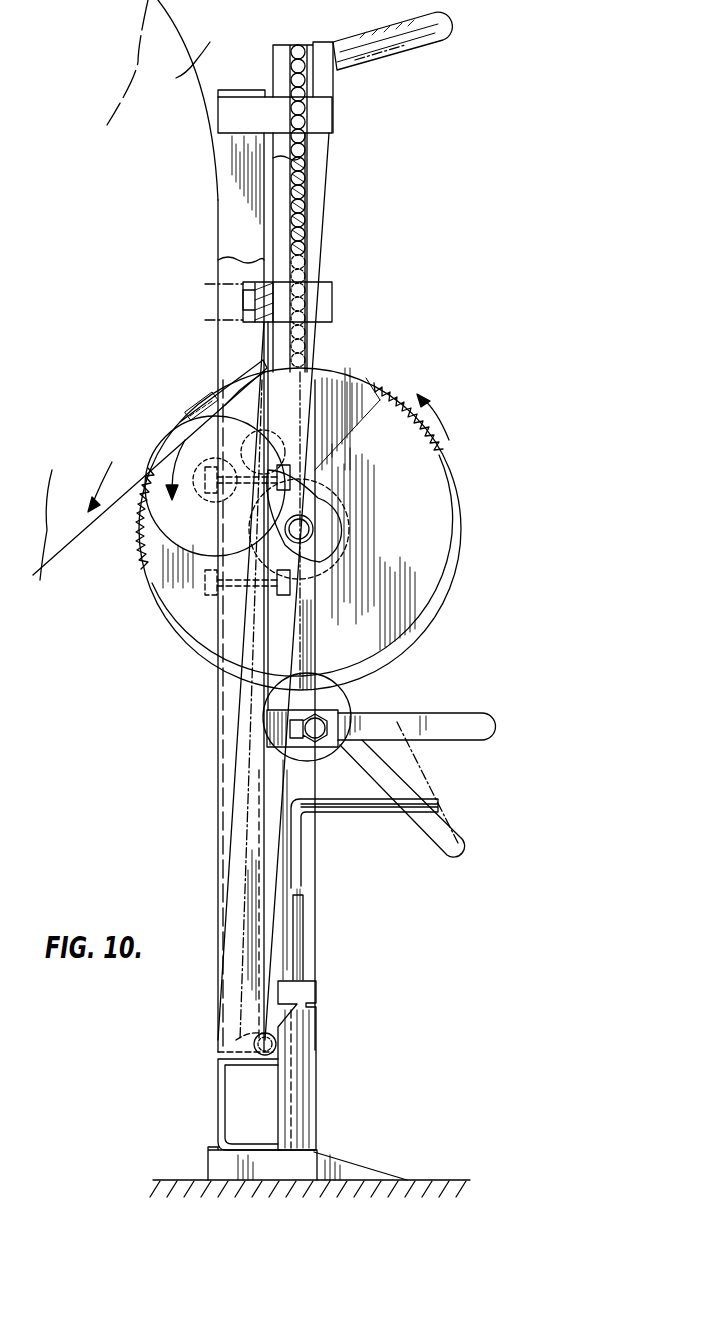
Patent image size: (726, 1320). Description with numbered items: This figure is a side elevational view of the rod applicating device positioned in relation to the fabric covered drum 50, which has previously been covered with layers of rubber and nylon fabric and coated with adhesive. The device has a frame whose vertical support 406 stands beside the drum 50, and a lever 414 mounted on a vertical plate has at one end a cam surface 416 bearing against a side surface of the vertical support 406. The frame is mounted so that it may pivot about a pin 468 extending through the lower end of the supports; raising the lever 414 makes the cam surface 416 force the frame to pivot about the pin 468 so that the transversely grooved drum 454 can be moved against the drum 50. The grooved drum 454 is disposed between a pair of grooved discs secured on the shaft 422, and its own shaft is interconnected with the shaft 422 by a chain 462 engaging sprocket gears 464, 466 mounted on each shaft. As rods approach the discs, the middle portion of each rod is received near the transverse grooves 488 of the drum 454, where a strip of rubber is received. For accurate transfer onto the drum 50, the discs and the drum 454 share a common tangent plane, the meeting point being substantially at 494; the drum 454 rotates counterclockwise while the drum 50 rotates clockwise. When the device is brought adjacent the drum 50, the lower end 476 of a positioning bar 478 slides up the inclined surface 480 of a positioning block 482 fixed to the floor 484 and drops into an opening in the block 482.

The fabric covered drum 50 is at (170, 290).
The vertical support 406 is at (292, 608).
The lever 414 is at (395, 722).
The cam surface 416 is at (337, 653).
The shaft 422 is at (313, 531).
The transversely grooved drum 454 is at (163, 447).
The chain 462 is at (165, 548).
The sprocket gear 464 is at (175, 520).
The sprocket gear 466 is at (362, 538).
The pin 468 is at (254, 1040).
The lower end of positioning bar 476 is at (307, 1163).
The positioning bar 478 is at (297, 932).
The inclined surface 480 is at (370, 1163).
The positioning block 482 is at (220, 1113).
The floor 484 is at (432, 1178).
The transverse grooves 488 is at (176, 398).
The meeting point 494 is at (175, 420).